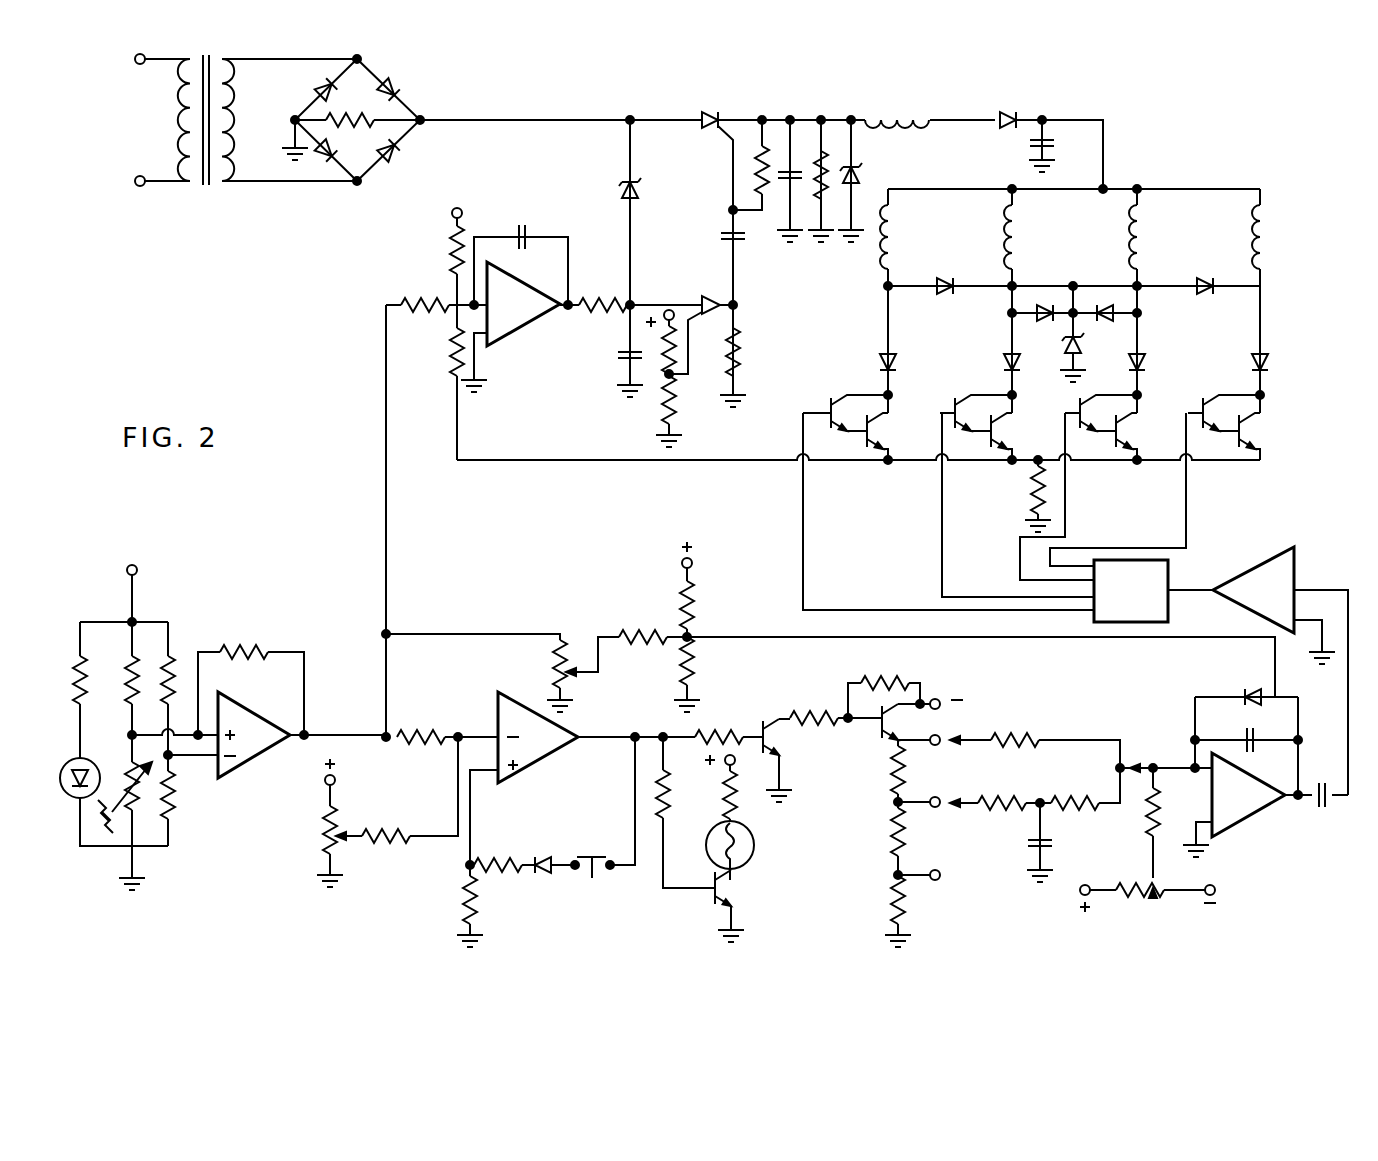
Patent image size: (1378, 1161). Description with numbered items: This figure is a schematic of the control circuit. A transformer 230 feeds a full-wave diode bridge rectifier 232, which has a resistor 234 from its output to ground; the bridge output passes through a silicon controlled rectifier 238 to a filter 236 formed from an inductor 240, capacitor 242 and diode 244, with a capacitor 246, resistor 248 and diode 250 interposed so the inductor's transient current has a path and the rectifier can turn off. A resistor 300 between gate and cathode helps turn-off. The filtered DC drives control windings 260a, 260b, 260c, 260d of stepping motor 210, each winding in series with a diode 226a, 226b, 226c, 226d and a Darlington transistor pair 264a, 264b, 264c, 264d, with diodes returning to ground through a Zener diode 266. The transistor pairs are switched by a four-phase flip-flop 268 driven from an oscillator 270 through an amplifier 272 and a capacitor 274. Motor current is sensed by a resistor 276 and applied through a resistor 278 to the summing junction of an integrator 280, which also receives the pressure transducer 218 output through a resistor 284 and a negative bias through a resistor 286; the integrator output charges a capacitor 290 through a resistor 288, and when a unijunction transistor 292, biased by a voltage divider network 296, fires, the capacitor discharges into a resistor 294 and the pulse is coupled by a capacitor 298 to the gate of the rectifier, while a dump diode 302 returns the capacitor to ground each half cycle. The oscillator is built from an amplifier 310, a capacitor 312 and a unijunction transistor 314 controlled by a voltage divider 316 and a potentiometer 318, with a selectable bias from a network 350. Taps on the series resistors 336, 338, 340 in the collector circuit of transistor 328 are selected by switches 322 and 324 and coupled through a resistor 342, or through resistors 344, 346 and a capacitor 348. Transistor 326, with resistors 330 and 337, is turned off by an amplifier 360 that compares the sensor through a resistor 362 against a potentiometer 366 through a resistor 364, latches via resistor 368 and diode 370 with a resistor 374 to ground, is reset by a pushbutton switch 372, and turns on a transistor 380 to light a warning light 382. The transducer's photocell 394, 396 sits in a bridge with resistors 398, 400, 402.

The transformer 230 is at (206, 187).
The full-wave diode bridge rectifier 232 is at (380, 111).
The resistor 234 is at (393, 136).
The silicon controlled rectifier 238 is at (726, 90).
The inductor 240 is at (930, 94).
The diode 244 is at (1036, 94).
The capacitor 242 is at (1050, 136).
The filter 236 is at (974, 166).
The resistor 300 is at (762, 172).
The zener diode 302 is at (626, 190).
The capacitor 246 is at (784, 182).
The capacitor 298 is at (730, 240).
The resistor 248 is at (830, 205).
The diode 250 is at (860, 176).
The resistor 294 is at (738, 352).
The motor 210 is at (1096, 226).
The control winding 260a is at (892, 244).
The control winding 260b is at (1016, 244).
The control winding 260c is at (1141, 244).
The control winding 260d is at (1264, 244).
The Darlington transistor pair and diode 264a is at (940, 292).
The Darlington transistor pair and diode 264b is at (1046, 312).
The Darlington transistor pair and diode 264c is at (1106, 312).
The Darlington transistor pair and diode 264d is at (1206, 292).
The Zener diode 266 is at (1083, 346).
The diode 226a is at (884, 358).
The diode 226b is at (1008, 360).
The diode 226c is at (1150, 360).
The diode 226d is at (1272, 360).
The resistor 276 is at (1034, 493).
The flip-flop 268 is at (1140, 560).
The amplifier 272 is at (1232, 582).
The resistor 286 is at (454, 250).
The resistor 278 is at (454, 356).
The resistor 284 is at (412, 300).
The integrator 280 is at (566, 277).
The resistor 288 is at (604, 300).
The capacitor 290 is at (628, 362).
The unijunction transistor 292 is at (712, 294).
The voltage divider network 296 is at (677, 400).
The potentiometer 318 is at (566, 664).
The voltage divider 316 is at (738, 607).
The photodiode 394 is at (60, 778).
The resistor 398 is at (138, 664).
The photocell 396 is at (148, 782).
The resistor 400 is at (172, 690).
The resistor 402 is at (172, 802).
The pressure transducer 218 is at (248, 809).
The resistor 362 is at (450, 706).
The amplifier 360 is at (530, 680).
The resistor 364 is at (396, 846).
The potentiometer 366 is at (330, 822).
The resistor 368 is at (512, 874).
The diode 370 is at (528, 858).
The pushbutton switch 372 is at (612, 830).
The resistor 374 is at (476, 912).
The resistor 330 is at (728, 730).
The transistor 326 is at (766, 722).
The resistor 337 is at (834, 704).
The transistor 328 is at (880, 724).
The first switch 322 is at (946, 732).
The resistor 336 is at (894, 776).
The second switch 324 is at (946, 798).
The resistor 338 is at (894, 840).
The resistor 340 is at (894, 906).
The warning light 382 is at (755, 845).
The transistor 380 is at (728, 894).
The resistor 342 is at (1066, 716).
The resistor 344 is at (1030, 778).
The resistor 346 is at (1094, 778).
The capacitor 348 is at (1050, 844).
The amplifier 310 is at (1228, 822).
The network 350 is at (1108, 904).
The oscillator 270 is at (1298, 854).
The capacitor 312 is at (1252, 734).
The unijunction transistor 314 is at (1254, 690).
The capacitor 274 is at (1328, 812).